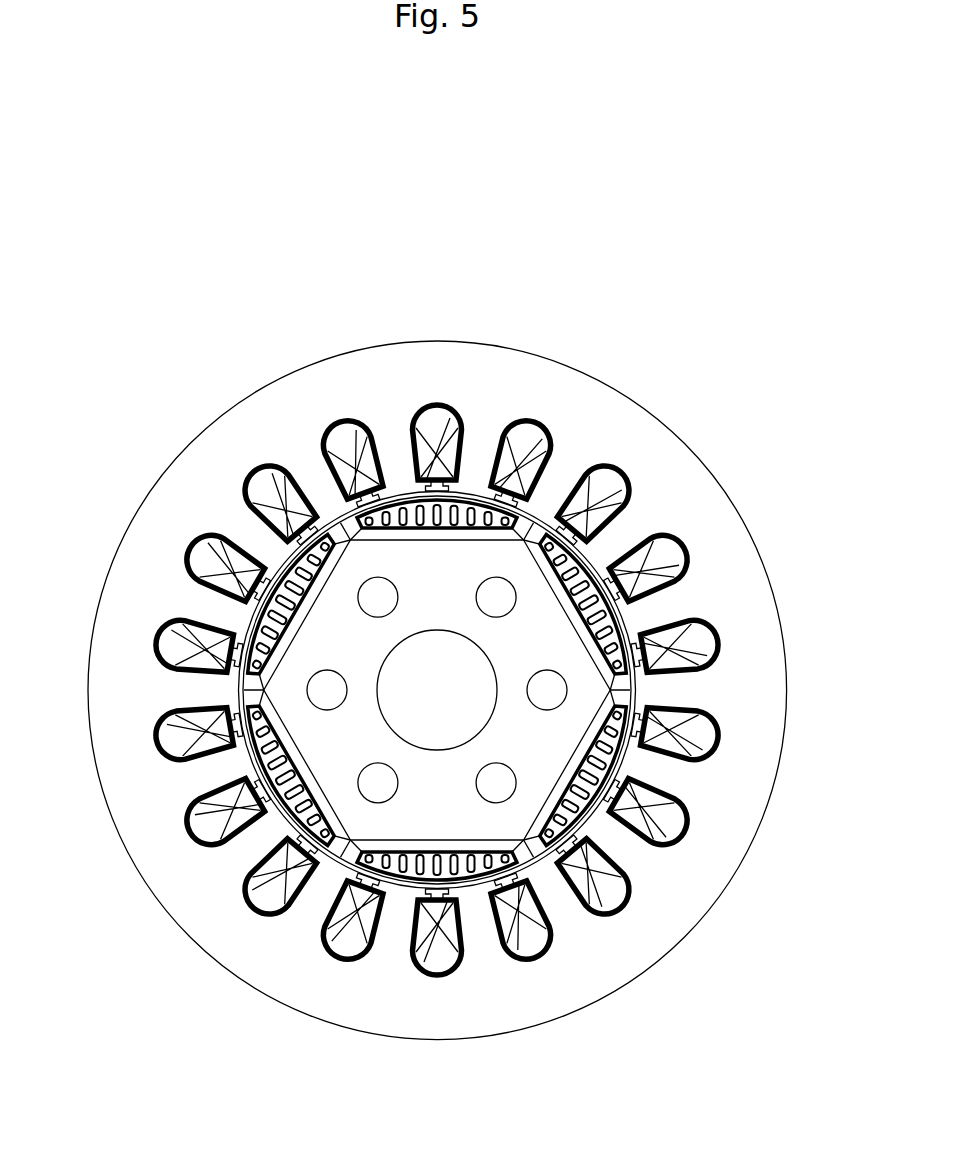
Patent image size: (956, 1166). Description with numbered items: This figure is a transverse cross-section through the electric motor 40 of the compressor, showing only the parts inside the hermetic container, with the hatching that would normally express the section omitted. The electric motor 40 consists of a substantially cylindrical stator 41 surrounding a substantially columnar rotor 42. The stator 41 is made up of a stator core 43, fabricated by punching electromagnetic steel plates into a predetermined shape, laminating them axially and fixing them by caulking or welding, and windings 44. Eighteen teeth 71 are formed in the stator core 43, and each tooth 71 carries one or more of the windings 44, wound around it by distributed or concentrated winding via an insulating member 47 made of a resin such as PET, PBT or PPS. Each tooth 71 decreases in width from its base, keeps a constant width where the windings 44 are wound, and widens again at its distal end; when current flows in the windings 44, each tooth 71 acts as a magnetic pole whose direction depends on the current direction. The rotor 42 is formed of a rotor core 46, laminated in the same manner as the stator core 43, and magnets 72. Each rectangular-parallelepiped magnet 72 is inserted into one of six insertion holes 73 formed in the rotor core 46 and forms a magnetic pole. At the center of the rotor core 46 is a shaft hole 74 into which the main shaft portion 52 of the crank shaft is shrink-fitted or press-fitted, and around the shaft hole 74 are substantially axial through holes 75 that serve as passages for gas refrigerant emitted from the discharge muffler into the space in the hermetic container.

The electric motor 40 is at (676, 403).
The stator 41 is at (215, 962).
The rotor 42 is at (253, 758).
The stator core 43 is at (752, 582).
The windings 44 is at (353, 447).
The rotor core 46 is at (282, 538).
The insulating member 47 is at (263, 457).
The main shaft portion 52 is at (420, 735).
The teeth 71 is at (483, 450).
The magnets 72 is at (623, 782).
The insertion holes 73 is at (617, 700).
The shaft hole 74 is at (383, 660).
The through holes 75 is at (498, 795).